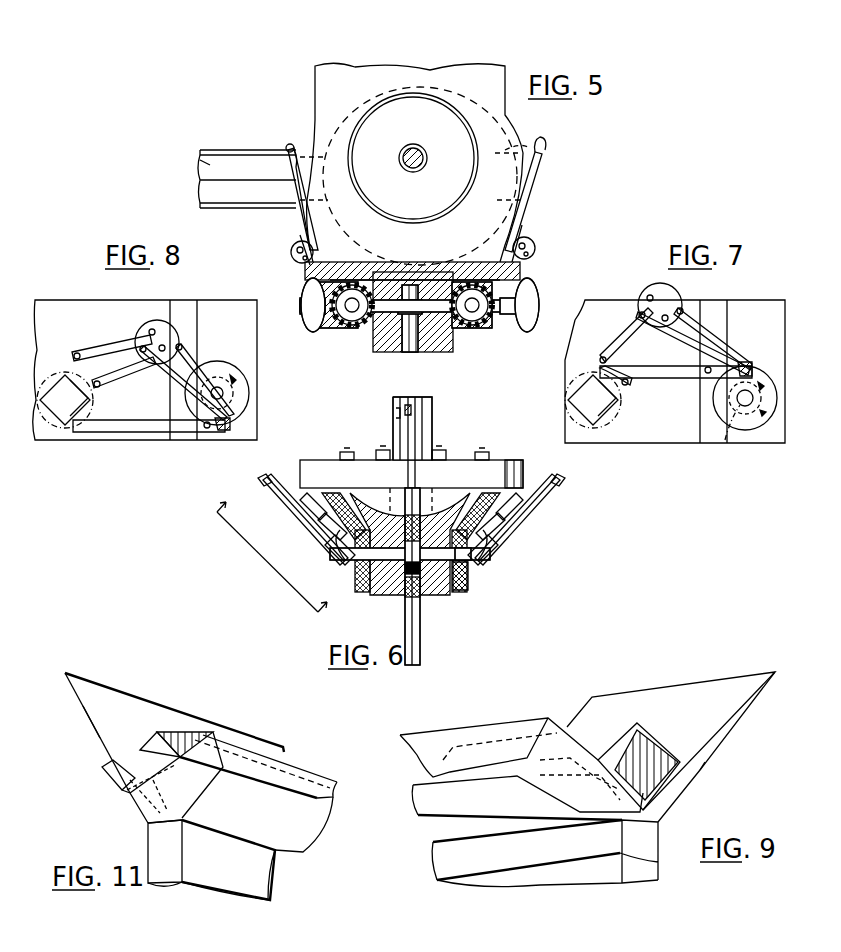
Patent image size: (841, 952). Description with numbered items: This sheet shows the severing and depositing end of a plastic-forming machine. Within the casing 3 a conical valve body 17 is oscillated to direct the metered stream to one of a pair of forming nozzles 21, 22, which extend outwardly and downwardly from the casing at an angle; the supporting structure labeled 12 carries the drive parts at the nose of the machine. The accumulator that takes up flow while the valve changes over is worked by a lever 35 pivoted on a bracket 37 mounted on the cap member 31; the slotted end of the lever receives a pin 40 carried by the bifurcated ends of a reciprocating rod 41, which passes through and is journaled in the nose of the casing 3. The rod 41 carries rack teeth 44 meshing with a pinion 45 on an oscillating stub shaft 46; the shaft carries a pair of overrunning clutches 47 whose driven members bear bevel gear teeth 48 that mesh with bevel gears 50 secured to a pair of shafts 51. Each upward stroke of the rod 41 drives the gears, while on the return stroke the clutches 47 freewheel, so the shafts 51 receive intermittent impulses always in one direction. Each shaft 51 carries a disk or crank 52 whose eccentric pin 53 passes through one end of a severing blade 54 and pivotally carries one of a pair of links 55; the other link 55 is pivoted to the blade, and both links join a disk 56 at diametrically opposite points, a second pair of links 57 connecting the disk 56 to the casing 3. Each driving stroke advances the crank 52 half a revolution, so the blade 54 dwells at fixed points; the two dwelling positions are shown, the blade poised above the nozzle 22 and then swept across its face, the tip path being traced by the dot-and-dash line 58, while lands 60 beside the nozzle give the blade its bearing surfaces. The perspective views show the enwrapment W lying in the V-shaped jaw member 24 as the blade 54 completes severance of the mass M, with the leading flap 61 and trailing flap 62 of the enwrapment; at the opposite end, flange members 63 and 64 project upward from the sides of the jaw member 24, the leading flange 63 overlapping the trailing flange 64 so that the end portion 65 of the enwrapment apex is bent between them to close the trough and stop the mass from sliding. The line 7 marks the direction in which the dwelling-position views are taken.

In FIG. 5, the casing 3 is at (416, 265).
In FIG. 8, the casing 3 is at (248, 362).
In FIG. 7, the casing 3 is at (658, 440).
In FIG. 6, the casing 3 is at (445, 593).
In FIG. 6, the line 7— 7 is at (262, 568).
In FIG. 5, the support plate 12 is at (360, 70).
In FIG. 6, the support plate 12 is at (330, 462).
In FIG. 5, the conical valve body 17 is at (325, 102).
In FIG. 5, the forming nozzle 21 is at (530, 133).
In FIG. 6, the forming nozzle 21 is at (528, 490).
In FIG. 5, the forming nozzle 22 is at (305, 140).
In FIG. 8, the forming nozzle 22 is at (50, 378).
In FIG. 7, the forming nozzle 22 is at (557, 395).
In FIG. 6, the forming nozzle 22 is at (300, 490).
In FIG. 5, the jaw member 24 is at (205, 195).
In FIG. 11, the jaw member 24 is at (258, 870).
In FIG. 9, the jaw member 24 is at (510, 868).
In FIG. 5, the cap member 31 is at (432, 128).
In FIG. 6, the lever 35 is at (405, 400).
In FIG. 6, the bracket 37 is at (394, 418).
In FIG. 6, the pin 40 is at (433, 405).
In FIG. 5, the reciprocating rod 41 is at (405, 350).
In FIG. 6, the reciprocating rod 41 is at (420, 640).
In FIG. 5, the rack teeth 44 is at (420, 314).
In FIG. 6, the rack teeth 44 is at (421, 620).
In FIG. 5, the pinion 45 is at (415, 285).
In FIG. 6, the pinion 45 is at (405, 575).
In FIG. 5, the oscillating stub shaft 46 is at (380, 352).
In FIG. 5, the overrunning clutches 47 is at (448, 275).
In FIG. 6, the overrunning clutches 47 is at (470, 575).
In FIG. 5, the bevel gear teeth 48 is at (368, 285).
In FIG. 6, the bevel gear teeth 48 is at (470, 590).
In FIG. 5, the bevel gears 50 is at (348, 285).
In FIG. 6, the bevel gears 50 is at (352, 505).
In FIG. 5, the shafts 51 is at (328, 314).
In FIG. 7, the shafts 51 is at (722, 445).
In FIG. 6, the shafts 51 is at (330, 545).
In FIG. 5, the disk or crank 52 is at (312, 332).
In FIG. 8, the disk or crank 52 is at (246, 390).
In FIG. 7, the disk or crank 52 is at (752, 430).
In FIG. 6, the disk or crank 52 is at (345, 565).
In FIG. 8, the eccentric pin 53 is at (222, 432).
In FIG. 7, the eccentric pin 53 is at (752, 368).
In FIG. 5, the severing blade 54 is at (285, 160).
In FIG. 8, the severing blade 54 is at (145, 432).
In FIG. 7, the severing blade 54 is at (678, 378).
In FIG. 9, the severing blade 54 is at (470, 800).
In FIG. 8, the links 55 is at (178, 388).
In FIG. 7, the links 55 is at (710, 338).
In FIG. 5, the disk 56 is at (292, 264).
In FIG. 8, the disk 56 is at (160, 320).
In FIG. 7, the disk 56 is at (660, 290).
In FIG. 6, the disk 56 is at (258, 478).
In FIG. 5, the links 57 is at (300, 243).
In FIG. 8, the links 57 is at (120, 338).
In FIG. 7, the links 57 is at (616, 330).
In FIG. 8, the path of the cutter tip 58 is at (50, 428).
In FIG. 7, the path of the cutter tip 58 is at (590, 430).
In FIG. 8, the lands 60 is at (92, 388).
In FIG. 7, the lands 60 is at (618, 398).
In FIG. 11, the leading flap 61 is at (305, 768).
In FIG. 9, the leading flap 61 is at (488, 728).
In FIG. 11, the trailing flap 62 is at (138, 700).
In FIG. 9, the trailing flap 62 is at (680, 690).
In FIG. 11, the leading flange member 63 is at (187, 786).
In FIG. 11, the trailing flange member 64 is at (102, 772).
In FIG. 11, the end portion of the apex 65 is at (128, 808).
In FIG. 11, the mass of plastic material M is at (152, 738).
In FIG. 9, the mass of plastic material M is at (637, 723).
In FIG. 11, the enwrapment W is at (95, 712).
In FIG. 9, the enwrapment W is at (707, 722).